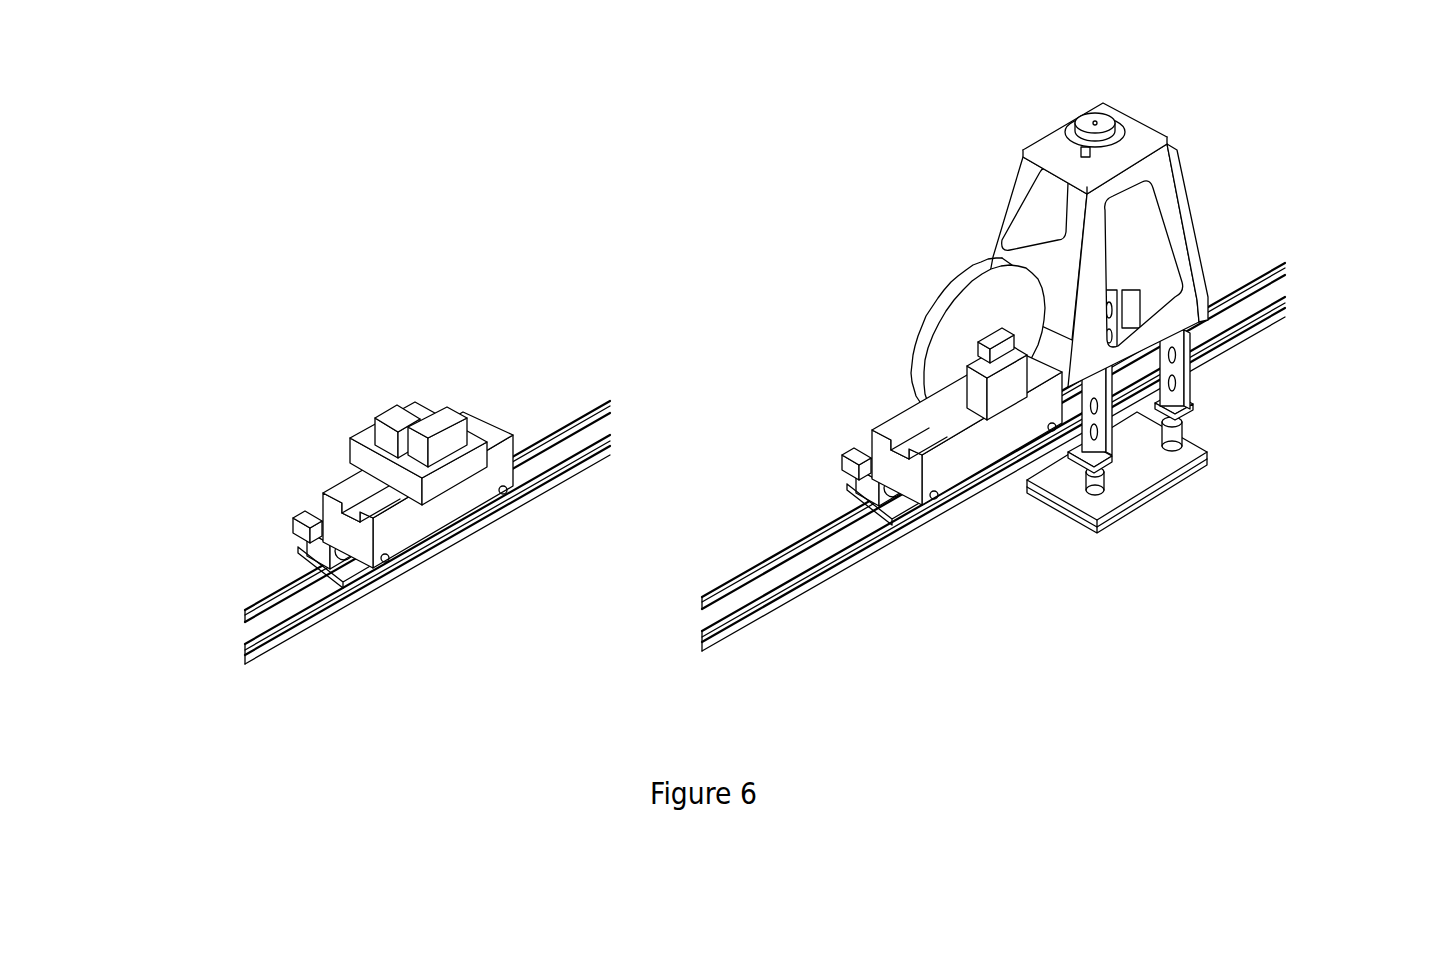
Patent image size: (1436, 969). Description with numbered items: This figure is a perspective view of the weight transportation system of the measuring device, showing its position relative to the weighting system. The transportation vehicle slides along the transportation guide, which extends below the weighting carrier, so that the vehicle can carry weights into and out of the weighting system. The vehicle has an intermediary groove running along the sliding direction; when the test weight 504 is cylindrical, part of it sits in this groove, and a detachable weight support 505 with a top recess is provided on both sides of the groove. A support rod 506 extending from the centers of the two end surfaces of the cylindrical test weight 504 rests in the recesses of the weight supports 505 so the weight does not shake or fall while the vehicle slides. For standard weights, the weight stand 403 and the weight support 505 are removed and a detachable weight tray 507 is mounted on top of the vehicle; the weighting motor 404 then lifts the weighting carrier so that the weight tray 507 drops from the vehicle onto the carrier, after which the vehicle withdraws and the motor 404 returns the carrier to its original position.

The test weight 504 is at (922, 320).
The weight support 505 is at (1122, 489).
The support rod 506 is at (1188, 473).
The weight tray 507 is at (481, 487).
The weight stand 403 is at (1192, 245).
The weighting motor 404 is at (1214, 401).